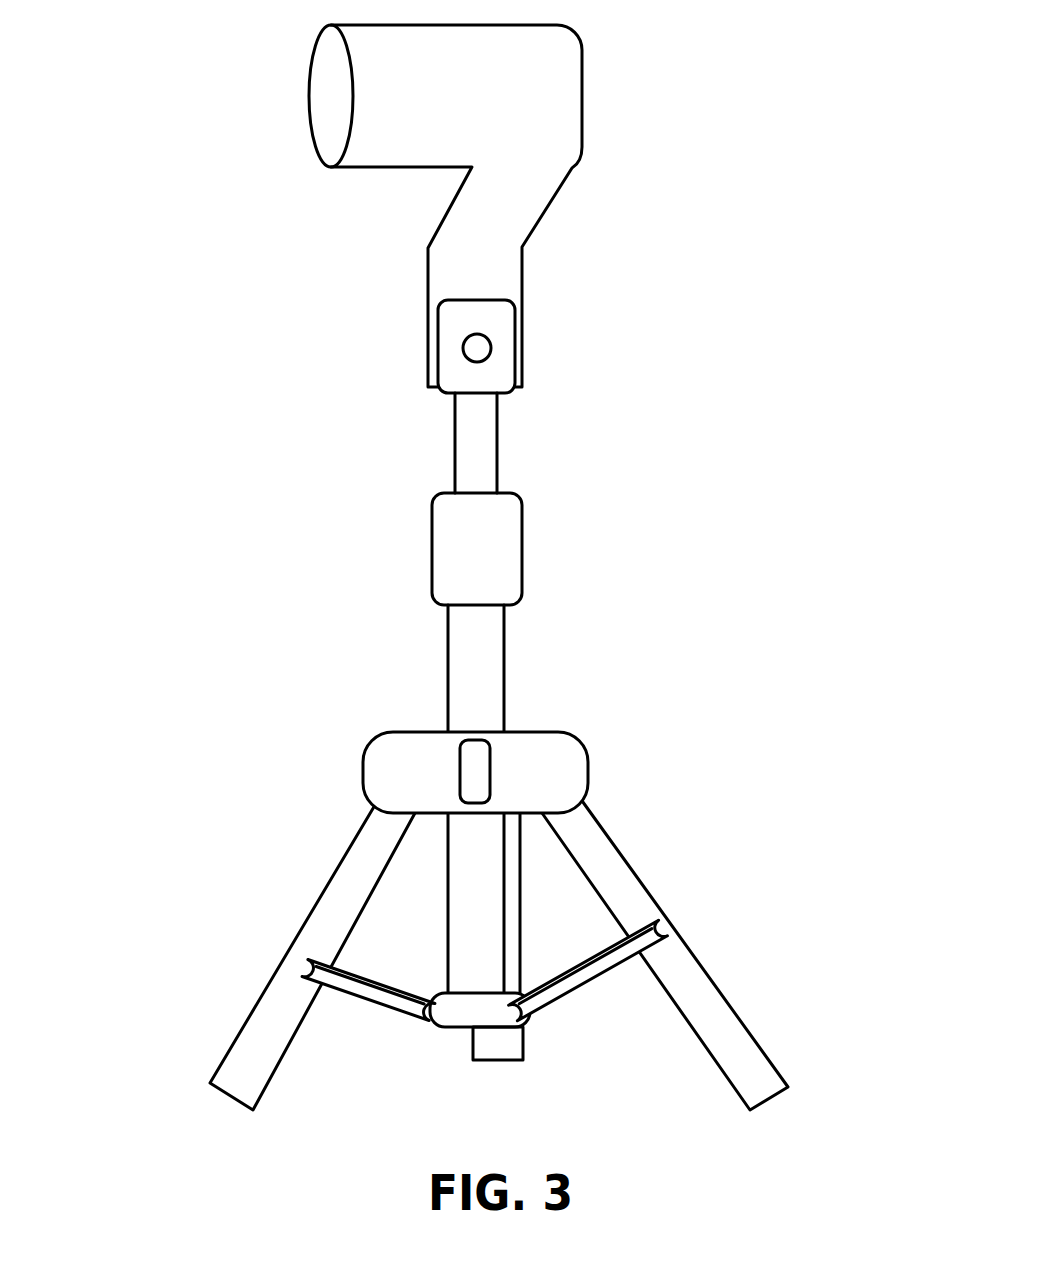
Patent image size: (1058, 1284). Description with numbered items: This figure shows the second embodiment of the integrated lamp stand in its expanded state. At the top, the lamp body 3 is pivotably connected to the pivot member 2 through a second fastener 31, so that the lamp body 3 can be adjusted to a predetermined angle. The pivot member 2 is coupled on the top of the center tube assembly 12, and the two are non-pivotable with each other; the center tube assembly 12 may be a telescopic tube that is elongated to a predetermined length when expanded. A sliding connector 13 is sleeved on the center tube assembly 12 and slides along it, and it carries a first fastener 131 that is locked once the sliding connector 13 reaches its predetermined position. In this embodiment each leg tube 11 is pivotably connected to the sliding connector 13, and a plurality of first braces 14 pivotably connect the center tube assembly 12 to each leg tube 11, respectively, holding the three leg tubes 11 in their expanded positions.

The lamp body 3 is at (582, 117).
The pivot member 2 is at (515, 345).
The second fastener 31 is at (463, 349).
The center tube assembly 12 is at (505, 650).
The sliding connector 13 is at (363, 770).
The first fastener 131 is at (490, 773).
The leg tube 11 is at (297, 947).
The first brace 14 is at (593, 980).